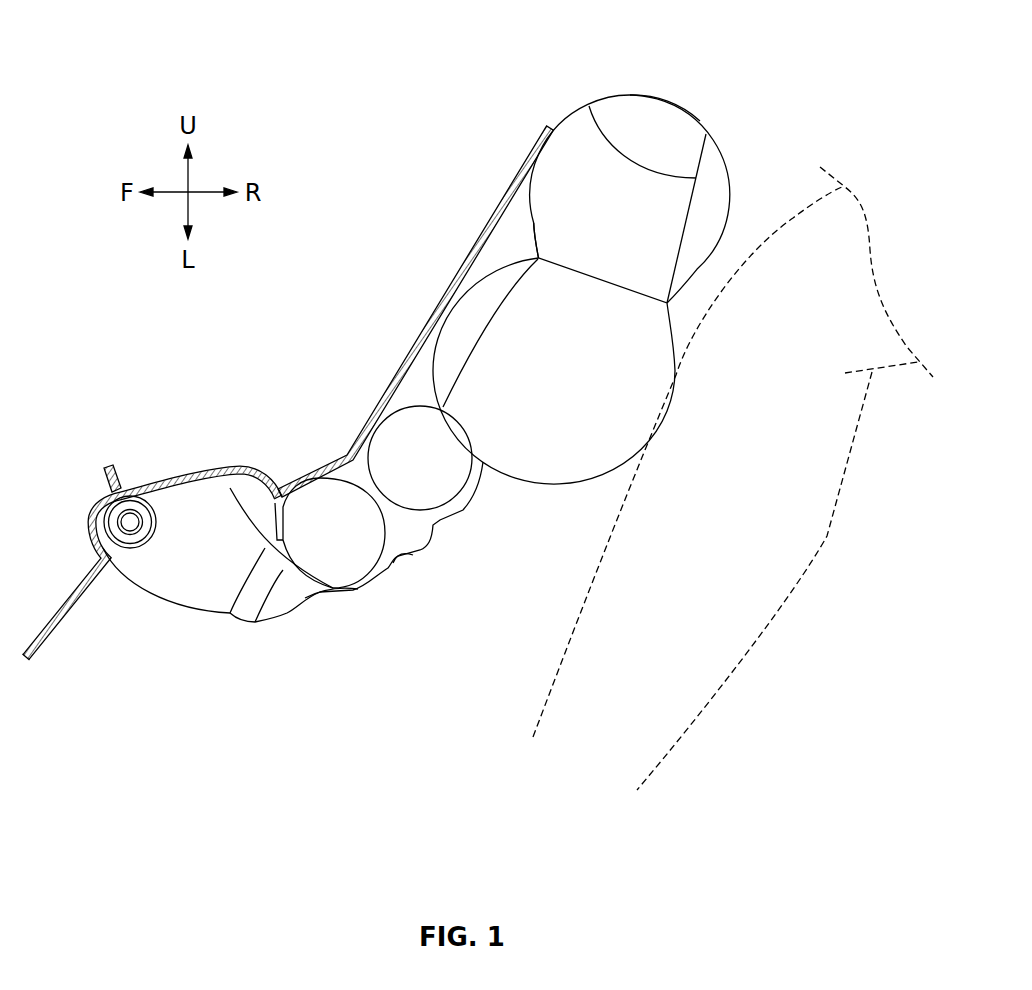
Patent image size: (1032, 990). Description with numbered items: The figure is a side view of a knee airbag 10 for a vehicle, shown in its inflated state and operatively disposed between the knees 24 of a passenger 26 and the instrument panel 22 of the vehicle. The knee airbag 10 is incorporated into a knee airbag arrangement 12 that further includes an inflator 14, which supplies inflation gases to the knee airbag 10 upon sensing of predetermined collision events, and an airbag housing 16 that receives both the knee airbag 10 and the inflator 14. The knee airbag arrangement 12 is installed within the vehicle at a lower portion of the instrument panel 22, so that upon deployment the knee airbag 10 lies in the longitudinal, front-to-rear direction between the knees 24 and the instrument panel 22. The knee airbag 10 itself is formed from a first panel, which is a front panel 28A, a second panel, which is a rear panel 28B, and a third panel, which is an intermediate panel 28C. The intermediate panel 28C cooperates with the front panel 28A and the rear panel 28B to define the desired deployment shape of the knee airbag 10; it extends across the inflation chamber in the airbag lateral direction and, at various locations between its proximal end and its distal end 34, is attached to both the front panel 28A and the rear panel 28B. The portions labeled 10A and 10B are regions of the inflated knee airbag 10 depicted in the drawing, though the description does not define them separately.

The knee airbag 10 is at (670, 90).
The lower chamber portion of airbag 10A is at (118, 575).
The upper chamber portion of airbag 10B is at (690, 115).
The knee airbag arrangement 12 is at (268, 650).
The inflator 14 is at (110, 522).
The airbag housing 16 is at (217, 466).
The instrument panel 22 is at (455, 293).
The knees 24 is at (720, 687).
The passenger 26 is at (820, 551).
The front panel 28A is at (537, 486).
The rear panel 28B is at (530, 213).
The intermediate panel 28C is at (257, 623).
The distal end 34 is at (589, 106).